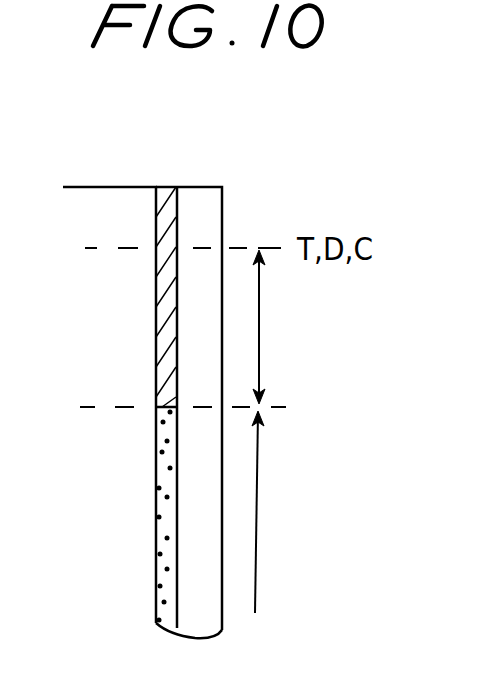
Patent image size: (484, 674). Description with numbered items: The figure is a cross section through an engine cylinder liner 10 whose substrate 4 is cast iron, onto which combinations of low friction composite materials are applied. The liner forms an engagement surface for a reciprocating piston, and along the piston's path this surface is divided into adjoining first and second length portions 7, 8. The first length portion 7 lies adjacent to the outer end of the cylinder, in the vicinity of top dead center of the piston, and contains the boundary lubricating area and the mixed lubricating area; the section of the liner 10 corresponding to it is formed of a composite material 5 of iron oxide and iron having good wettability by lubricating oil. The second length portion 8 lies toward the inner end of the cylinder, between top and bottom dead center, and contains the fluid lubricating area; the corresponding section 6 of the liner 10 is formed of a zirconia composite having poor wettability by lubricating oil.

The engine cylinder liner 10 is at (138, 186).
The substrate 4 is at (200, 208).
The composite material 5 is at (162, 300).
The section of the liner 6 is at (160, 515).
The first length portion 7 is at (262, 326).
The second length portion 8 is at (265, 499).